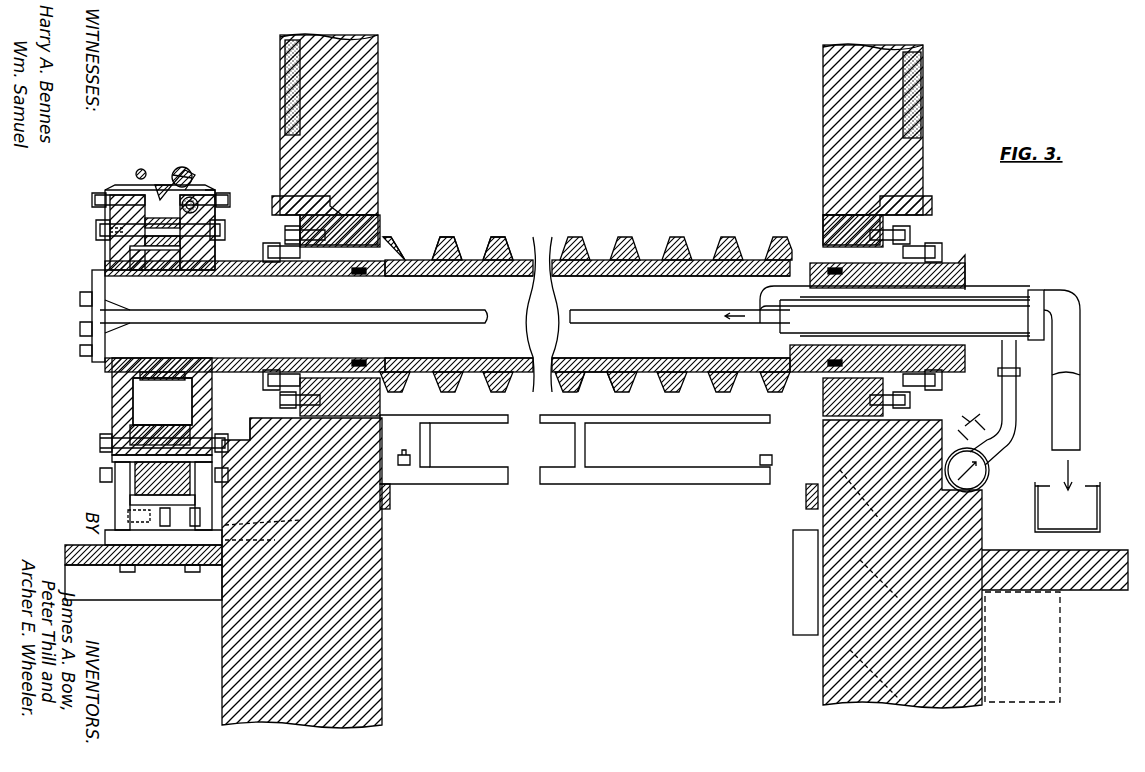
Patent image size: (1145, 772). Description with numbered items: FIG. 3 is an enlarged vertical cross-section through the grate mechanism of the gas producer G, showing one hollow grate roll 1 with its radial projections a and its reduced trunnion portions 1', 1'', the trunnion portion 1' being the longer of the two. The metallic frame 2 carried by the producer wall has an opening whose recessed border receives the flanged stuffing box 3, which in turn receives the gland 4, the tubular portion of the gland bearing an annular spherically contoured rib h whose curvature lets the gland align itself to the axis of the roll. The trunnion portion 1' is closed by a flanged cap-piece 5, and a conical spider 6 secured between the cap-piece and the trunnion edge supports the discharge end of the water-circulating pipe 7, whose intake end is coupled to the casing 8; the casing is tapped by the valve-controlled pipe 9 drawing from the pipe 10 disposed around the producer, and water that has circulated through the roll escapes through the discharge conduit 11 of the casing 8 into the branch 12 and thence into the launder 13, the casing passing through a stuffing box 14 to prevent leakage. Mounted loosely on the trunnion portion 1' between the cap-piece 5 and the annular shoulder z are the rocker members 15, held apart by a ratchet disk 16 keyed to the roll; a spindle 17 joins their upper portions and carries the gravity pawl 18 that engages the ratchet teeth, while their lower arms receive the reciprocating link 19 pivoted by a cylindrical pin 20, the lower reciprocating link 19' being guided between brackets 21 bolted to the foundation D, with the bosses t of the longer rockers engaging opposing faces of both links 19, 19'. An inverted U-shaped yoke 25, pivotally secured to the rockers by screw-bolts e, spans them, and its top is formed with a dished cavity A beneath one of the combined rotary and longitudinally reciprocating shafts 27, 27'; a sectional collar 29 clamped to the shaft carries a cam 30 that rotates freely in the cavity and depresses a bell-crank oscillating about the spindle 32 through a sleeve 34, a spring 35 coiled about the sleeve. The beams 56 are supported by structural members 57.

The grate roll 1 is at (586, 314).
The trunnion portion 1' is at (245, 301).
The trunnion portion 1'' is at (894, 301).
The metallic frame 2 is at (375, 215).
The stuffing box 3 is at (300, 390).
The gland 4 is at (292, 370).
The flanged cap-piece 5 is at (90, 312).
The conical spider 6 is at (125, 300).
The water-circulating pipe 7 is at (480, 312).
The casing 8 is at (775, 330).
The valve-controlled pipe 9 is at (1004, 395).
The pipe 10 is at (992, 468).
The discharge conduit 11 is at (985, 286).
The branch 12 is at (1070, 380).
The launder 13 is at (1092, 482).
The stuffing box 14 is at (970, 278).
The rocker member 15 is at (112, 390).
The ratchet disk 16 is at (160, 378).
The spindle 17 is at (105, 232).
The gravity pawl 18 is at (150, 218).
The reciprocating link 19 is at (145, 467).
The reciprocating link 19' is at (138, 483).
The cylindrical pin 20 is at (205, 446).
The bracket 21 is at (115, 518).
The inverted U-shaped yoke 25 is at (118, 185).
The combined rotary and longitudinally reciprocating shaft 27 is at (199, 142).
The combined rotary and longitudinally reciprocating shaft 27' is at (145, 159).
The sectional collar 29 is at (190, 170).
The cam 30 is at (180, 168).
The spindle 32 is at (194, 200).
The sleeve 34 is at (212, 212).
The spring 35 is at (210, 195).
The beam 56 is at (695, 440).
The structural member 57 is at (388, 522).
The dished cavity A is at (165, 180).
The foundation D is at (165, 580).
The gas producer G is at (925, 68).
The radial projections a is at (578, 392).
The screw-bolt e is at (100, 202).
The annular spherically contoured rib h is at (360, 280).
The boss t is at (120, 420).
The annular shoulder z is at (214, 262).